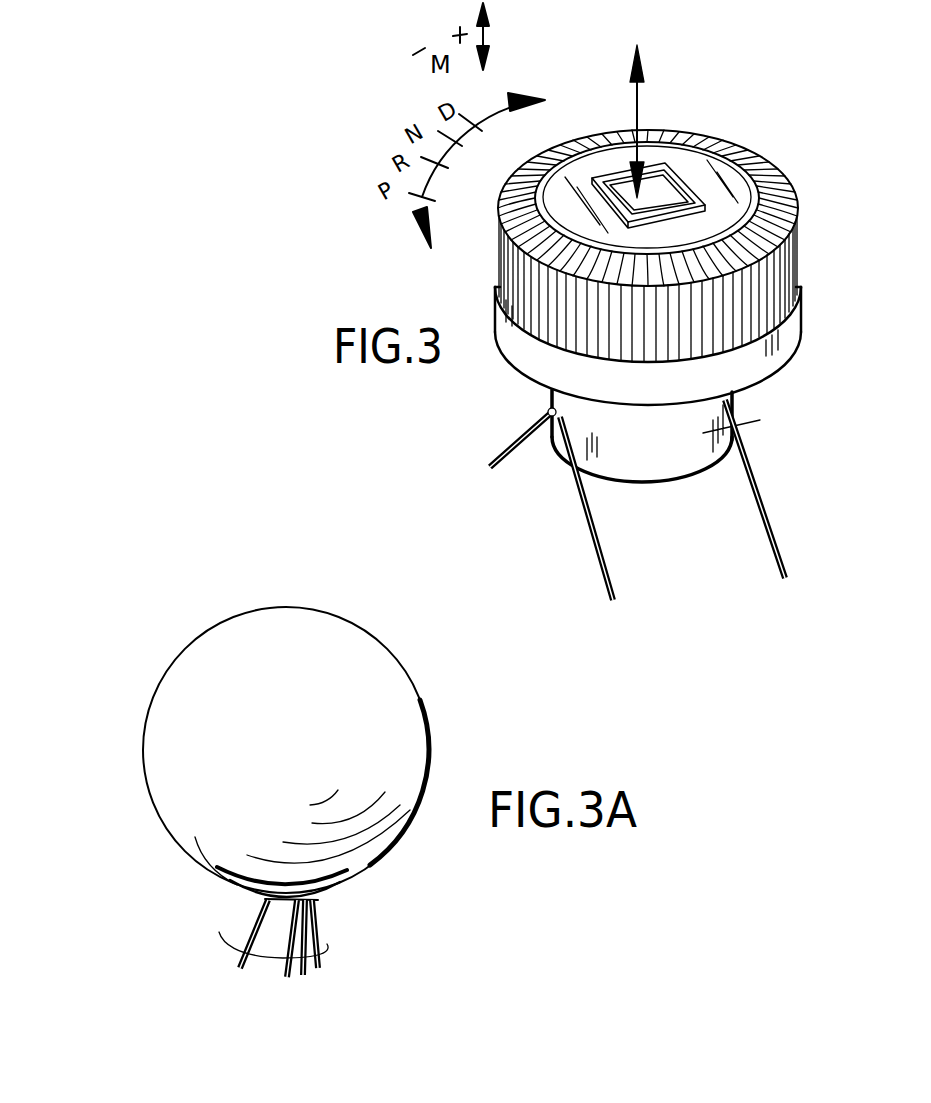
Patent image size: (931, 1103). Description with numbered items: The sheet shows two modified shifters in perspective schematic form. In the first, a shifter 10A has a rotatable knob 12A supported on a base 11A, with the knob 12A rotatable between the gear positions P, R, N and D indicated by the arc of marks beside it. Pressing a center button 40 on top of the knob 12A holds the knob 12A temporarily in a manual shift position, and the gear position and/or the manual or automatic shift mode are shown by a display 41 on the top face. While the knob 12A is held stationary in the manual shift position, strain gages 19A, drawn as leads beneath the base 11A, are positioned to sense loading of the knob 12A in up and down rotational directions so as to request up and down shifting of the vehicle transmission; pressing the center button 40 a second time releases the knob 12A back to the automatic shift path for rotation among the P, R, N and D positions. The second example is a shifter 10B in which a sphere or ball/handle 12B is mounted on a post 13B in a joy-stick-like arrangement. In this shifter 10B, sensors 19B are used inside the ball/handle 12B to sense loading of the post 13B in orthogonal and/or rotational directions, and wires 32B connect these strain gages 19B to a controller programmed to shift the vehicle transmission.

In FIG. 3, the shifter 10A is at (728, 98).
In FIG. 3, the rotatable knob 12A is at (752, 155).
In FIG. 3, the base 11A is at (703, 433).
In FIG. 3, the strain gages 19A is at (723, 408).
In FIG. 3, the center button 40 is at (583, 162).
In FIG. 3, the display 41 is at (657, 172).
In FIG. 3A, the shifter 10B is at (170, 632).
In FIG. 3A, the sphere or ball/handle 12B is at (192, 757).
In FIG. 3A, the post 13B is at (238, 893).
In FIG. 3A, the sensors (strain gages) 19B is at (318, 943).
In FIG. 3A, the wires 32B is at (223, 933).